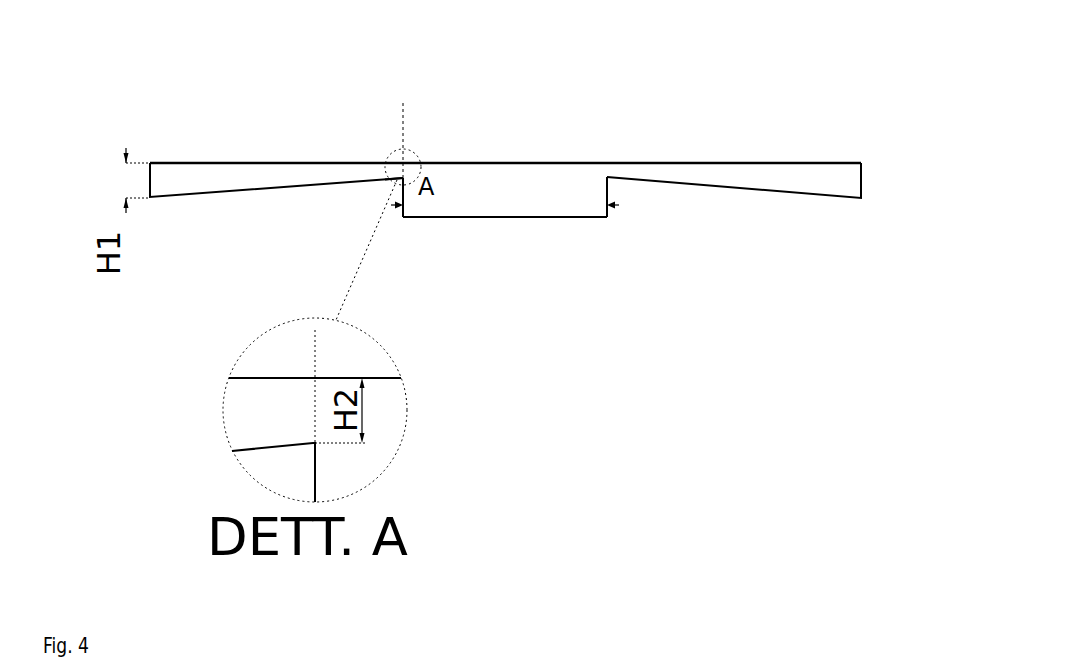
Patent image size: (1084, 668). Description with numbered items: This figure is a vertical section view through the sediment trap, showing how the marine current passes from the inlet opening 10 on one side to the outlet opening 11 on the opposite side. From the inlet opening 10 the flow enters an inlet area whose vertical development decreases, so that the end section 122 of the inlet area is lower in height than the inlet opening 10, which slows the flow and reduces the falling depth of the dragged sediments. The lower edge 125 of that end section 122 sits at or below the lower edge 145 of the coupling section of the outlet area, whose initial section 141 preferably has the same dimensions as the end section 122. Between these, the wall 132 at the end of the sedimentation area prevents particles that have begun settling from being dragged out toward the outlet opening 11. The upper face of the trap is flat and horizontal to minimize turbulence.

The inlet opening 10 is at (157, 163).
The outlet opening 11 is at (861, 163).
The end section of the inlet area 122 is at (403, 137).
The lower edge of the end section of the inlet area 125 is at (398, 180).
The wall at the end of the sedimentation area 132 is at (605, 192).
The initial section of the outlet area 141 is at (605, 138).
The lower edge of the coupling section of the outlet area 145 is at (608, 178).